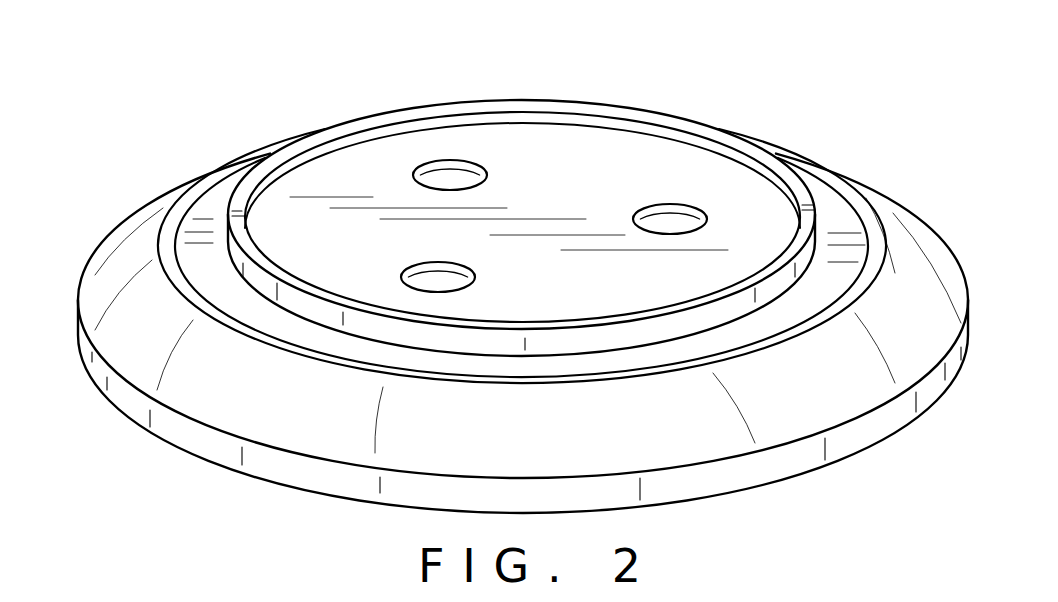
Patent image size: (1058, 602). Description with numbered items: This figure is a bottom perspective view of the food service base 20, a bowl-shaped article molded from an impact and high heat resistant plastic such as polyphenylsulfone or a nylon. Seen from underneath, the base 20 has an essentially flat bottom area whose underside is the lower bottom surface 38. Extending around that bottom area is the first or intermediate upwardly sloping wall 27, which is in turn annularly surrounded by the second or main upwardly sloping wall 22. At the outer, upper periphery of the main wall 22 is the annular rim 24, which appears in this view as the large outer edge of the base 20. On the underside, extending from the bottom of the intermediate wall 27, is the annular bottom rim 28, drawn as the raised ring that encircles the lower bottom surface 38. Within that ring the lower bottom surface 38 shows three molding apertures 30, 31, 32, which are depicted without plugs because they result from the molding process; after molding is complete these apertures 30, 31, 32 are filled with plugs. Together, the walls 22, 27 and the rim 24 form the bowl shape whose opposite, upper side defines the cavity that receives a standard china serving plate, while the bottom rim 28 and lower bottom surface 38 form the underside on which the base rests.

The food service base 20 is at (523, 275).
The main upwardly sloping wall 22 is at (135, 247).
The annular rim 24 is at (185, 432).
The intermediate upwardly sloping wall 27 is at (207, 217).
The annular bottom rim 28 is at (400, 125).
The molding aperture 30 is at (671, 227).
The molding aperture 31 is at (440, 277).
The molding aperture 32 is at (448, 182).
The lower bottom surface 38 is at (595, 167).